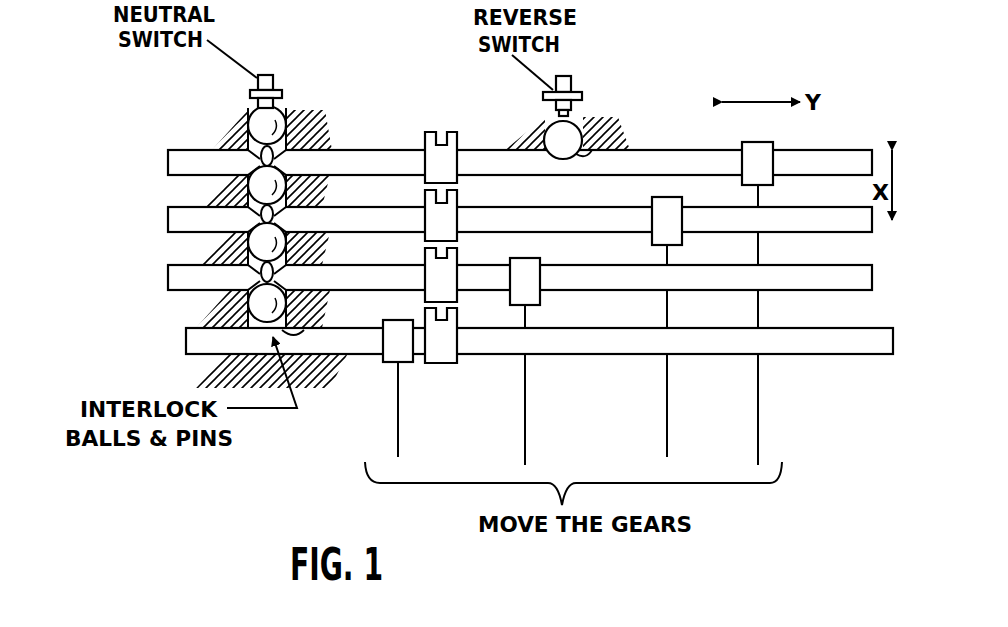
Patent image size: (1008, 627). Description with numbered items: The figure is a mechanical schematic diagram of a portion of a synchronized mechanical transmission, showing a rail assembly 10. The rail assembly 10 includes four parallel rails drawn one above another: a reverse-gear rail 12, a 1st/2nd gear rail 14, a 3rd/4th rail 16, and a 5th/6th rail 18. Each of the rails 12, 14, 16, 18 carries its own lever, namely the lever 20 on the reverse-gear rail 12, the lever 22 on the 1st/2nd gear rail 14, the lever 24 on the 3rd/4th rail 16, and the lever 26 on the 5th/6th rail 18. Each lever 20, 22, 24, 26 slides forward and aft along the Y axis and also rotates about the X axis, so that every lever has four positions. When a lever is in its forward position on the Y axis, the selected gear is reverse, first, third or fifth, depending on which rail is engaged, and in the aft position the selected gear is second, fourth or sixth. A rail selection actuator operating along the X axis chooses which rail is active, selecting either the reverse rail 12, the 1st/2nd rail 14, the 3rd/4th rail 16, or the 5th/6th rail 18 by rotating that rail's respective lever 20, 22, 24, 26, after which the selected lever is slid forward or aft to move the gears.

The rail assembly 10 is at (364, 132).
The reverse-gear rail 12 is at (180, 150).
The 1st/2nd gear rail 14 is at (180, 207).
The 3rd/4th rail 16 is at (180, 265).
The 5th/6th rail 18 is at (186, 328).
The lever 20 is at (743, 143).
The lever 22 is at (652, 200).
The lever 24 is at (541, 262).
The lever 26 is at (391, 320).